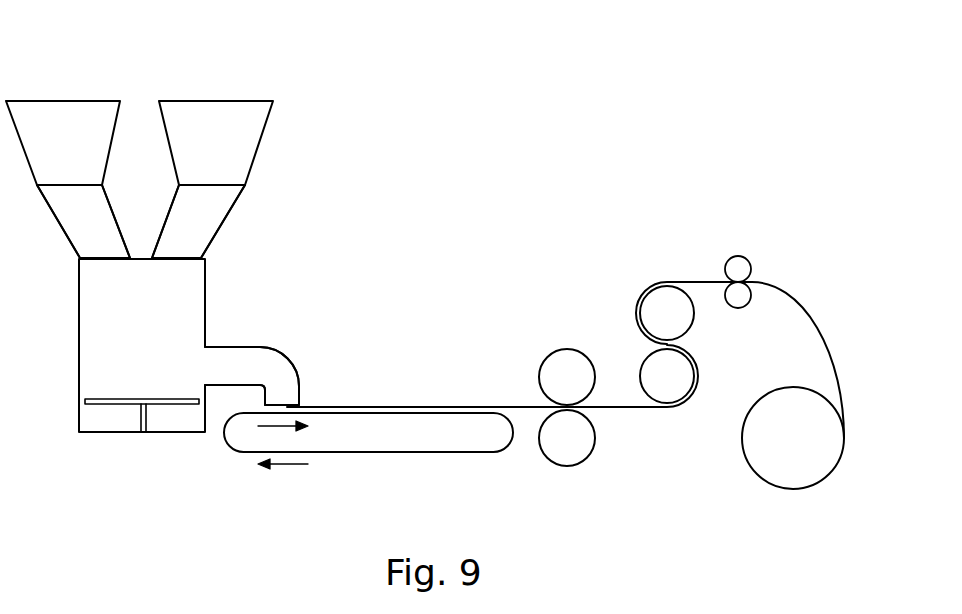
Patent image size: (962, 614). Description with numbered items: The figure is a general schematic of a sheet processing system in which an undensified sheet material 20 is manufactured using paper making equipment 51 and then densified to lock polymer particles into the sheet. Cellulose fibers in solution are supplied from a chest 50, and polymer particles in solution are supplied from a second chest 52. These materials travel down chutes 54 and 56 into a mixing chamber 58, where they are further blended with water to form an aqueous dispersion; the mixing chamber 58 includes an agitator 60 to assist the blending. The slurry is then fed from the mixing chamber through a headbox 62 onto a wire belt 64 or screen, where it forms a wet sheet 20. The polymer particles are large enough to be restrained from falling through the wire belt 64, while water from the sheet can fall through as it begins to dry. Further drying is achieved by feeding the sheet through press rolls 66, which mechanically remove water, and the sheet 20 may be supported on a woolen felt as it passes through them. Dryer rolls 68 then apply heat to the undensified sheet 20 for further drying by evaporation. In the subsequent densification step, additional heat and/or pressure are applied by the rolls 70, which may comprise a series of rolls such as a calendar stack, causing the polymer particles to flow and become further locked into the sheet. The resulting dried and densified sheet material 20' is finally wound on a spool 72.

The paper making equipment 51 is at (422, 220).
The chest 50 is at (50, 101).
The chest 52 is at (213, 101).
The chute 54 is at (83, 203).
The chute 56 is at (220, 228).
The mixing chamber 58 is at (193, 308).
The agitator 60 is at (166, 397).
The headbox 62 is at (248, 350).
The wire belt 64 is at (430, 453).
The sheet 20 is at (519, 302).
The press rolls 66 is at (582, 365).
The dryer rolls 68 is at (653, 302).
The rolls 70 is at (738, 273).
The densified sheet material 20' is at (821, 360).
The spool 72 is at (805, 398).